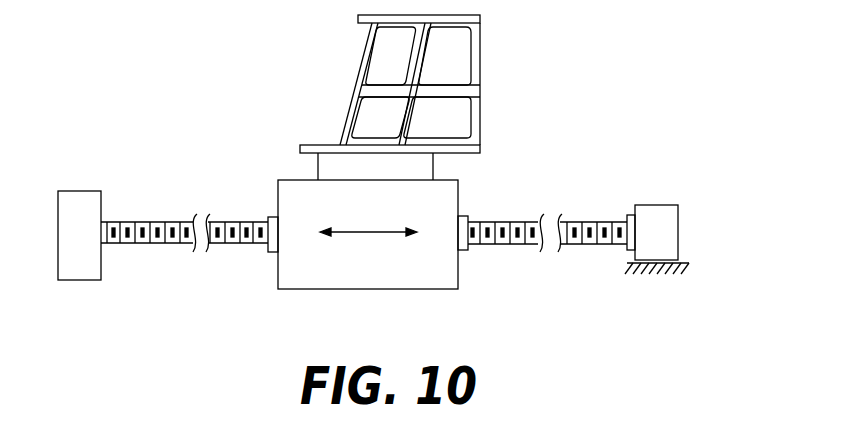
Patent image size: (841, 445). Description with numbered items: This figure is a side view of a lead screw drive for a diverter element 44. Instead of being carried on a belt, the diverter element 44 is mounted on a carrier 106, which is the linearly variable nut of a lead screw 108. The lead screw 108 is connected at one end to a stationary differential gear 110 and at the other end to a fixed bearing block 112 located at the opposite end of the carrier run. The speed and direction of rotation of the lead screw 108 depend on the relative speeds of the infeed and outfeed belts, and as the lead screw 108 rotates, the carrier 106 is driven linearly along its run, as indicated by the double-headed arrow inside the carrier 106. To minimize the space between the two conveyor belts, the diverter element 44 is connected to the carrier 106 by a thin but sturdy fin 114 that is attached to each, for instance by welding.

The diverter element 44 is at (472, 23).
The fin 114 is at (427, 170).
The carrier 106 is at (430, 273).
The lead screw 108 is at (153, 245).
The stationary differential gear 110 is at (75, 264).
The fixed bearing block 112 is at (672, 242).